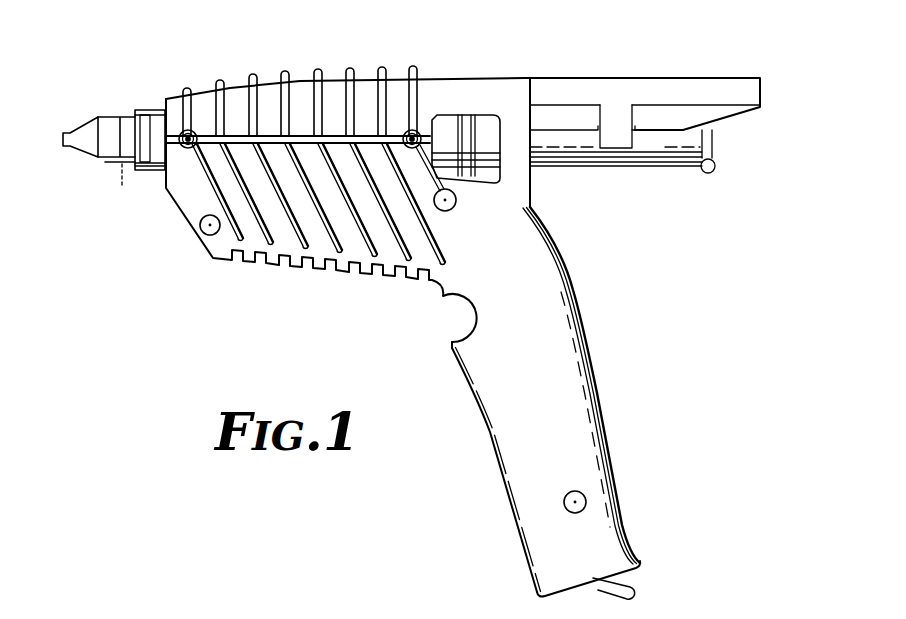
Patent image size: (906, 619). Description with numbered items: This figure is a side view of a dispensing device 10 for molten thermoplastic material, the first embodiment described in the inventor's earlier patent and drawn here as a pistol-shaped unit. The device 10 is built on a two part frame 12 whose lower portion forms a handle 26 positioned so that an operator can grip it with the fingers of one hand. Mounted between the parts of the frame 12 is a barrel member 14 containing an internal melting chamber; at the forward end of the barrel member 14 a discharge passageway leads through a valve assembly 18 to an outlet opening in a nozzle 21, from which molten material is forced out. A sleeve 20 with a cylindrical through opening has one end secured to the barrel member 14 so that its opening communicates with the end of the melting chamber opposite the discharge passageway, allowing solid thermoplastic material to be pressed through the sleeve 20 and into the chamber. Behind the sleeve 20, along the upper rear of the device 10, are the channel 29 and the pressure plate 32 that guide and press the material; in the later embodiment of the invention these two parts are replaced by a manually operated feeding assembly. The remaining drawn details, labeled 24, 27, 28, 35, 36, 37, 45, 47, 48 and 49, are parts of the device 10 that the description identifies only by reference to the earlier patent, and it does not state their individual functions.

The dispensing device 10 is at (537, 55).
The frame 12 is at (583, 342).
The barrel member 14 is at (150, 110).
The valve assembly 18 is at (123, 186).
The sleeve 20 is at (490, 175).
The nozzle 21 is at (67, 131).
The feed channel 24 is at (544, 162).
The handle 26 is at (497, 432).
The slot 27 is at (616, 146).
The corner shoulder 28 is at (642, 144).
The channel 29 is at (622, 82).
The pressure plate 32 is at (714, 143).
The ball 35 is at (716, 168).
The pivot pin 36 is at (184, 131).
The heat sink bar 37 is at (193, 132).
The post 45 is at (443, 118).
The foot 47 is at (636, 580).
The post 48 is at (468, 120).
The nozzle body 49 is at (126, 117).